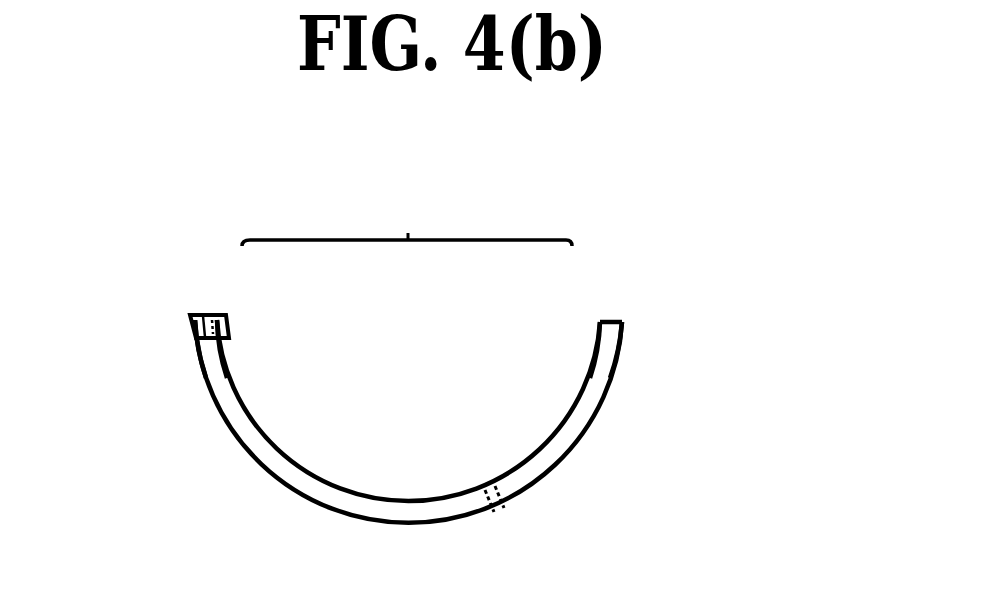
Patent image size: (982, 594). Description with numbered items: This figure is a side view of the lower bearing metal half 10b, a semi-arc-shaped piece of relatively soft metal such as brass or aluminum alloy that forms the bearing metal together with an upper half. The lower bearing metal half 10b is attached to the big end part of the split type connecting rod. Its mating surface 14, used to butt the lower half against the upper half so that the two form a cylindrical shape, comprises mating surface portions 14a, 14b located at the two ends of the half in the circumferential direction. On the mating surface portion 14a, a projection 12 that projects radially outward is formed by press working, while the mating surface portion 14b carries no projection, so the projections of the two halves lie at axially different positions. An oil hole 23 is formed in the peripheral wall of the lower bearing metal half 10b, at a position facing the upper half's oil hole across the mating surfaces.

The lower bearing metal half 10b is at (672, 325).
The mating surface 14 is at (407, 218).
The mating surface portion 14a is at (216, 318).
The mating surface portion 14b is at (612, 322).
The projection 12 is at (190, 334).
The oil hole 23 is at (500, 505).